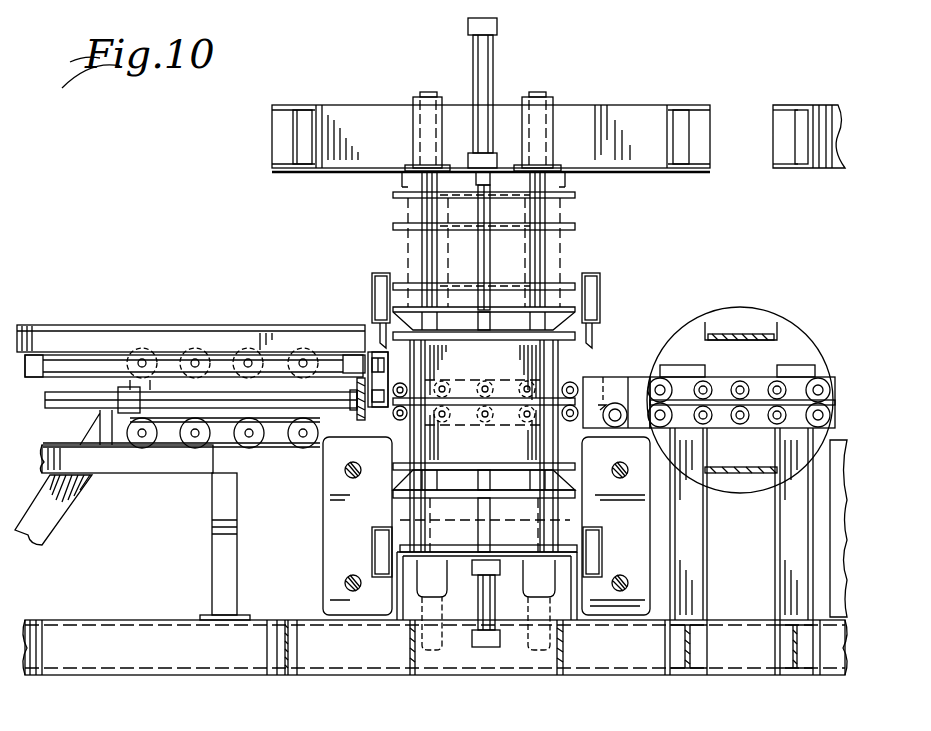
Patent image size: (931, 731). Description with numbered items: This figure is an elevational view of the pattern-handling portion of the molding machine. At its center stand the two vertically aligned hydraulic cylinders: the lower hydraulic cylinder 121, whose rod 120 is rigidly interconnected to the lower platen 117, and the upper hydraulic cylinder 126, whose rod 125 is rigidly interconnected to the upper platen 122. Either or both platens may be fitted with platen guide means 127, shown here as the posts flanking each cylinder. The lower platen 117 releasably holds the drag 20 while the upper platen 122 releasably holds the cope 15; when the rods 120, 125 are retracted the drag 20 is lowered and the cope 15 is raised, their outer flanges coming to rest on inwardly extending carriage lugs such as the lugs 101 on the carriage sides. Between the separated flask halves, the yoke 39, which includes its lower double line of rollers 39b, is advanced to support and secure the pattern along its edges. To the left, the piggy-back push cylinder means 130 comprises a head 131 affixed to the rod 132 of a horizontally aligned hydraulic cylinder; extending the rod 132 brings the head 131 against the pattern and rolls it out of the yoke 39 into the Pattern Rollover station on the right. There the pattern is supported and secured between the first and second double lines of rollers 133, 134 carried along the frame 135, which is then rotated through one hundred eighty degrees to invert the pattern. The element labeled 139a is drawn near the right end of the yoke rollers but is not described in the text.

The cope 15 is at (497, 368).
The drag 20 is at (487, 450).
The yoke 39 is at (385, 420).
The lower double line of rollers 39b is at (562, 425).
The lugs 101 is at (392, 508).
The lower platen 117 is at (484, 525).
The rod 120 is at (487, 573).
The hydraulic cylinder 121 is at (512, 630).
The upper platen 122 is at (508, 316).
The rod 125 is at (484, 258).
The hydraulic cylinder 126 is at (490, 72).
The platen guide means 127 is at (427, 110).
The push cylinder means 130 is at (90, 352).
The head 131 is at (383, 378).
The rod 132 is at (330, 352).
The first double line of rollers 133 is at (740, 383).
The second double line of rollers 134 is at (740, 422).
The frame 135 is at (683, 388).
The roller block 139a is at (609, 392).